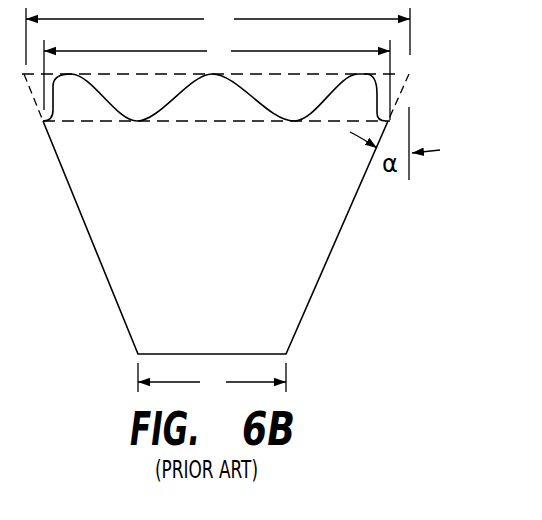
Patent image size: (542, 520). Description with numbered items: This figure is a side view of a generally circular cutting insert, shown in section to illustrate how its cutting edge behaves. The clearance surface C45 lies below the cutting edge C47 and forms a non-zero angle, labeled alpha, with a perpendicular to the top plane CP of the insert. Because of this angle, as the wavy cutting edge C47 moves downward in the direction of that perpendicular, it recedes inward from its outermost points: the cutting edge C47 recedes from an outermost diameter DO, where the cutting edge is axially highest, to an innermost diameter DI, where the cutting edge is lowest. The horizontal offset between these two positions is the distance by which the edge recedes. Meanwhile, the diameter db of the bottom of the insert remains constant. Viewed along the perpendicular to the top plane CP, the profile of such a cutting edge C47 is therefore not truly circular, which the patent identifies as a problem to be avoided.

The clearance surface C45 is at (295, 278).
The cutting edge C47 is at (261, 101).
The top plane CP is at (420, 75).
The outermost diameter DO is at (218, 36).
The innermost diameter DI is at (217, 80).
The diameter of the bottom of the insert db is at (212, 377).